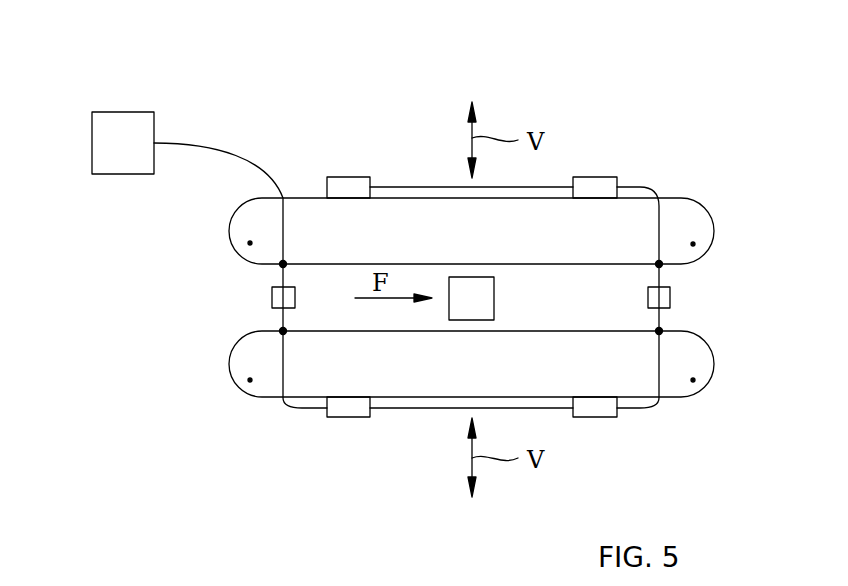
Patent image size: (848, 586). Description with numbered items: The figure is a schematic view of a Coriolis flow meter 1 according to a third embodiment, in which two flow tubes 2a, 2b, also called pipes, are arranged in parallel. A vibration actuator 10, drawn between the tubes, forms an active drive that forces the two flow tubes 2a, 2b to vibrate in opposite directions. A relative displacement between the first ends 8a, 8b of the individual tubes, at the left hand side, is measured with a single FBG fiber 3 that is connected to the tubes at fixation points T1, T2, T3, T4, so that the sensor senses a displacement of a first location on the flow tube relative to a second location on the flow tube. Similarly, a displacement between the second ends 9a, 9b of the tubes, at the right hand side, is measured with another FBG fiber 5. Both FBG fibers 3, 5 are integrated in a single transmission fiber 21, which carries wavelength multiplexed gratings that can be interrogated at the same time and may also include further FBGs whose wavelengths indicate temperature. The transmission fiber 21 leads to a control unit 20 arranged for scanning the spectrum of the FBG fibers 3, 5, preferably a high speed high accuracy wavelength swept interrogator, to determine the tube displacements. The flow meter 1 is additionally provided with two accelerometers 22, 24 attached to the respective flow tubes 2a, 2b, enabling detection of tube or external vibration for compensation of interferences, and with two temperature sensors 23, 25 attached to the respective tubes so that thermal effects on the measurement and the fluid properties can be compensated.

The Coriolis flow meter 1 is at (659, 100).
The flow tube 2a is at (459, 241).
The flow tube 2b is at (459, 374).
The FBG fiber 3 is at (295, 298).
The FBG fiber 5 is at (648, 297).
The first end of flow tube 8a is at (250, 243).
The first end of flow tube 8b is at (250, 380).
The second end of flow tube 9a is at (693, 244).
The second end of flow tube 9b is at (693, 380).
The vibration actuator 10 is at (494, 298).
The control unit 20 is at (110, 155).
The transmission fiber 21 is at (207, 145).
The accelerometer 22 is at (349, 417).
The temperature sensor 23 is at (595, 417).
The accelerometer 24 is at (594, 177).
The temperature sensor 25 is at (347, 177).
The fixation point T1 is at (283, 264).
The fixation point T2 is at (283, 331).
The fixation point T3 is at (659, 264).
The fixation point T4 is at (659, 331).